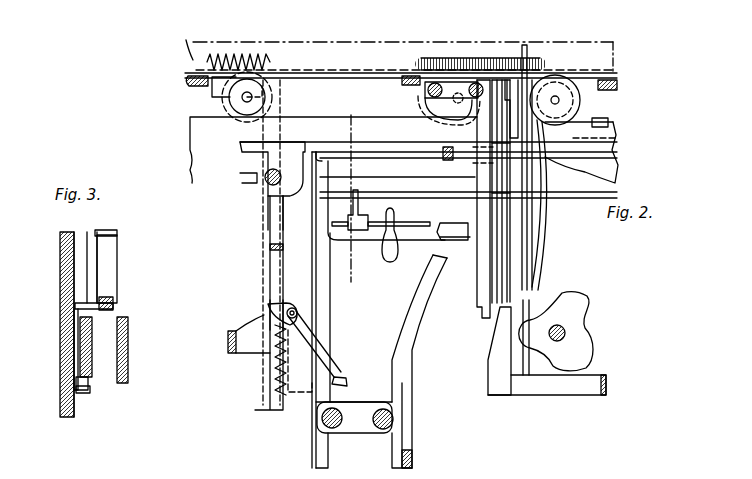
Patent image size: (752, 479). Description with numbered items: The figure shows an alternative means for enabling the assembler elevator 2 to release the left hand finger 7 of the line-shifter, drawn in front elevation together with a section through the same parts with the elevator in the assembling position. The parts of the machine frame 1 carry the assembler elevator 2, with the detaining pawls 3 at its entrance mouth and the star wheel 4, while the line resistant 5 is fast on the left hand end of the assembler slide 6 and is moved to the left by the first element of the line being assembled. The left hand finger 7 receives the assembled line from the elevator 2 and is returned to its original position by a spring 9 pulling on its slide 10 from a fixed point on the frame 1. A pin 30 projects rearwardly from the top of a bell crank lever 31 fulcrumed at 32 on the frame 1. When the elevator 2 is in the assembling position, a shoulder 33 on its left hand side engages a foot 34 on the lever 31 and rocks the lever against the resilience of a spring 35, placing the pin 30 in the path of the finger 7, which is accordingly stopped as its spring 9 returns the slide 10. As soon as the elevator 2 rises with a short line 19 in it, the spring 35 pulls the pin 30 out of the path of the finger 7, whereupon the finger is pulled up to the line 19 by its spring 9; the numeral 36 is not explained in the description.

In FIG. 2, the machine frame 1 is at (398, 47).
In FIG. 3, the machine frame 1 is at (68, 276).
In FIG. 2, the assembler elevator 2 is at (369, 150).
In FIG. 3, the assembler elevator 2 is at (123, 353).
In FIG. 2, the detaining pawls 3 is at (350, 201).
In FIG. 2, the star wheel 4 is at (577, 302).
In FIG. 2, the line resistant 5 is at (497, 351).
In FIG. 2, the assembler slide 6 is at (580, 395).
In FIG. 2, the left hand finger 7 is at (282, 135).
In FIG. 3, the left hand finger 7 is at (112, 253).
In FIG. 2, the spring 9 is at (247, 52).
In FIG. 2, the slide 10 is at (605, 84).
In FIG. 2, the short line 19 is at (520, 177).
In FIG. 2, the pin 30 is at (270, 303).
In FIG. 3, the pin 30 is at (87, 261).
In FIG. 2, the bell crank lever 31 is at (322, 358).
In FIG. 3, the bell crank lever 31 is at (72, 343).
In FIG. 2, the fulcrum 32 is at (292, 306).
In FIG. 2, the shoulder 33 is at (285, 223).
In FIG. 2, the foot 34 is at (348, 378).
In FIG. 3, the foot 34 is at (82, 390).
In FIG. 2, the spring 35 is at (274, 378).
In FIG. 3, the support 36 is at (82, 472).